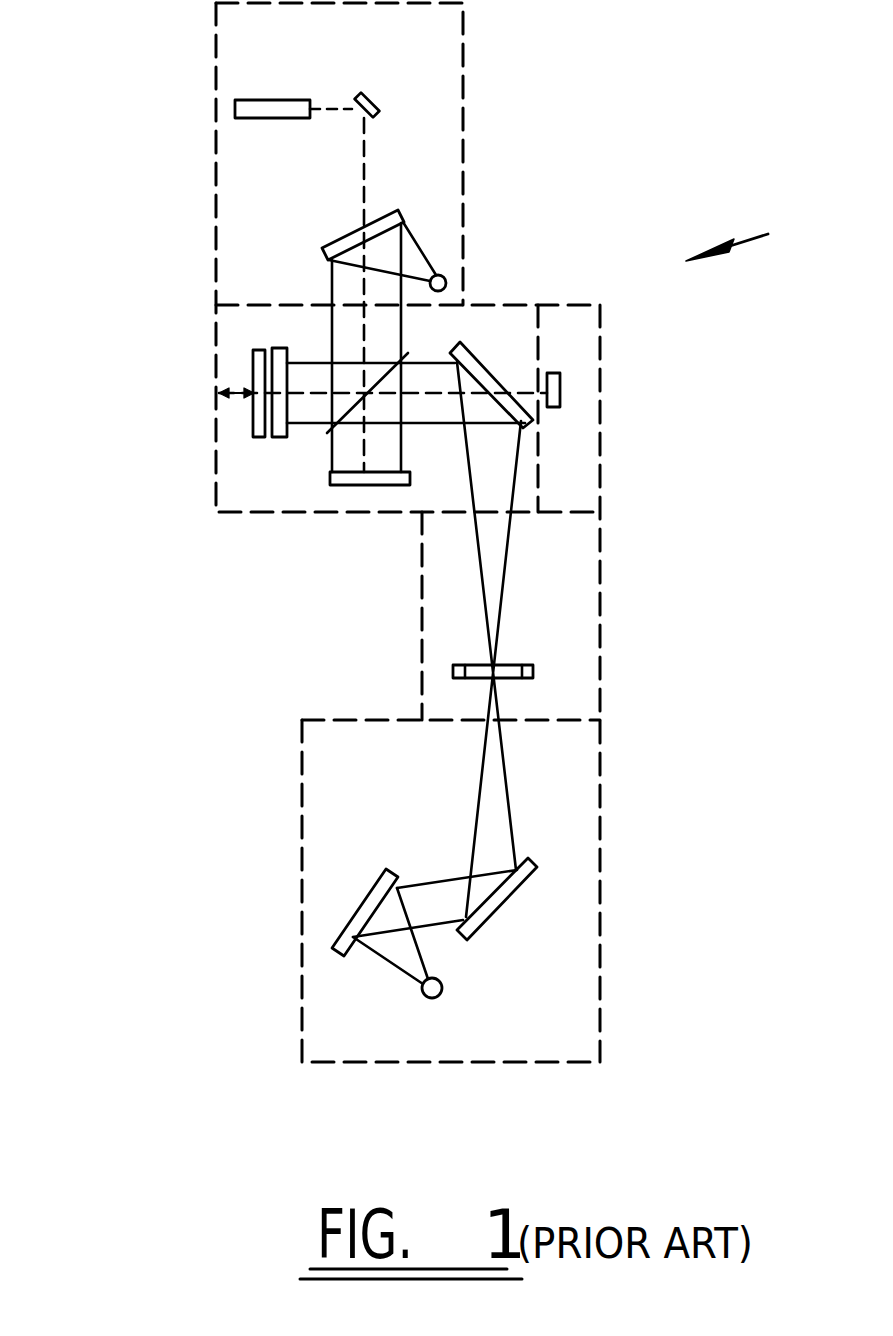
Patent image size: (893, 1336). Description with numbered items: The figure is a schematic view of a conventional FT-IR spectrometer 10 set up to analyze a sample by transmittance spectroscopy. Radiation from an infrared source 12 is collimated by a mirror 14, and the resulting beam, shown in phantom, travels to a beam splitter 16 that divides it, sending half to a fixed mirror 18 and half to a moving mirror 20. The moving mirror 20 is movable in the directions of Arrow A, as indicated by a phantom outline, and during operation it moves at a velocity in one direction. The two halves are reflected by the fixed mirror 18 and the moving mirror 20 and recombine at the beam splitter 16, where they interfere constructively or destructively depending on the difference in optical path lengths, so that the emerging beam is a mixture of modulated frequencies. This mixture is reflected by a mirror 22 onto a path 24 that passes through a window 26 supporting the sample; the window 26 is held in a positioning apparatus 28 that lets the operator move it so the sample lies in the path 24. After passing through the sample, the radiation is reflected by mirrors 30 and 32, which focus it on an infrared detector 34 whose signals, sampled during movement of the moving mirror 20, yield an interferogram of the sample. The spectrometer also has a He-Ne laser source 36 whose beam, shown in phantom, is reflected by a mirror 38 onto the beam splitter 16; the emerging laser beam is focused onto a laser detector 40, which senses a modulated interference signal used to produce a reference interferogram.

The FT-IR spectrometer 10 is at (762, 245).
The infrared source 12 is at (447, 273).
The mirror 14 is at (386, 208).
The beam splitter 16 is at (386, 372).
The fixed mirror 18 is at (340, 487).
The moving mirror 20 is at (283, 437).
The mirror 22 is at (528, 424).
The path 24 is at (507, 552).
The window 26 is at (510, 662).
The positioning apparatus 28 is at (533, 672).
The mirror 30 is at (530, 868).
The mirror 32 is at (338, 932).
The infrared detector 34 is at (440, 998).
The He-Ne laser source 36 is at (232, 110).
The mirror 38 is at (377, 96).
The laser detector 40 is at (553, 372).
The Arrow A is at (213, 395).